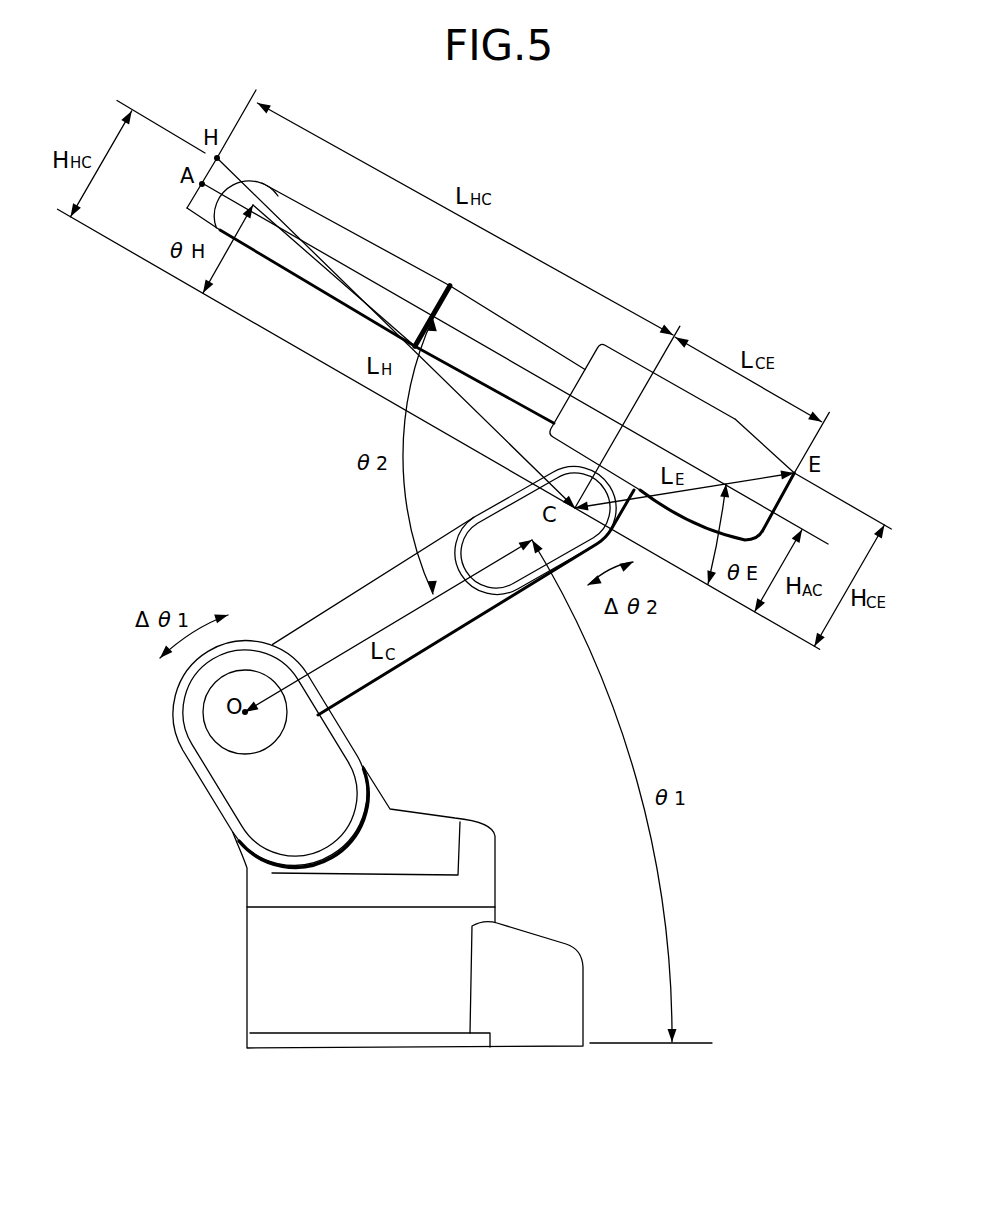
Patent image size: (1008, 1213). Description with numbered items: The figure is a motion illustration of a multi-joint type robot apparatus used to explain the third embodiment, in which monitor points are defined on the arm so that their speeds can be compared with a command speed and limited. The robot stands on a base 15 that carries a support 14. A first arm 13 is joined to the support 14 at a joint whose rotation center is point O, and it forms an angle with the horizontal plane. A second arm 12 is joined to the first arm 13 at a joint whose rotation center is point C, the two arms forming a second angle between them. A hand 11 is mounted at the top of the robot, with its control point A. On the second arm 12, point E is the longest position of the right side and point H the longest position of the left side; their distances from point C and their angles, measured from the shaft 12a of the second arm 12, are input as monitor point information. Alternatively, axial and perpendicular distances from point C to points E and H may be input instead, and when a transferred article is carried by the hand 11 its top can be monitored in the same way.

The hand 11 is at (434, 429).
The second arm 12 is at (314, 207).
The shaft 12a is at (527, 333).
The first arm 13 is at (419, 653).
The support 14 is at (226, 795).
The base 15 is at (256, 996).